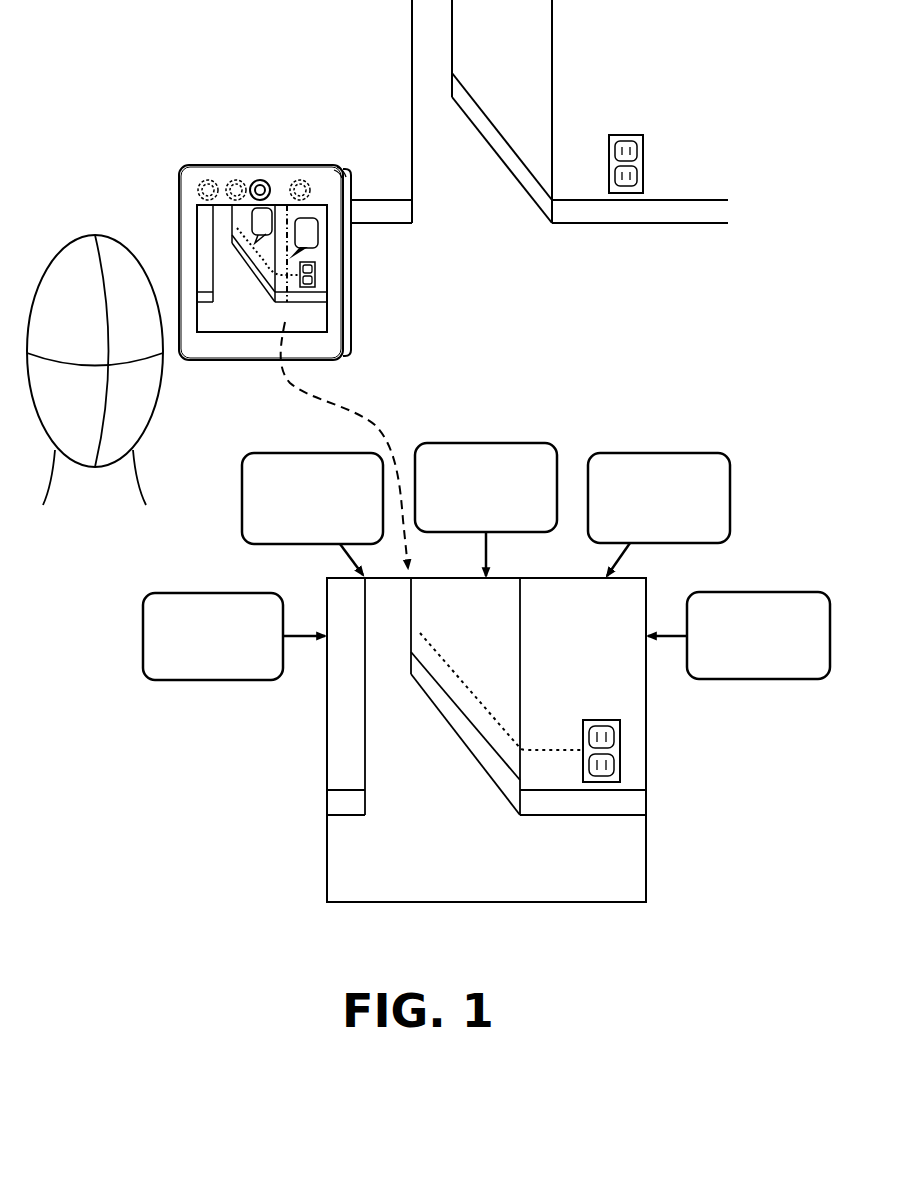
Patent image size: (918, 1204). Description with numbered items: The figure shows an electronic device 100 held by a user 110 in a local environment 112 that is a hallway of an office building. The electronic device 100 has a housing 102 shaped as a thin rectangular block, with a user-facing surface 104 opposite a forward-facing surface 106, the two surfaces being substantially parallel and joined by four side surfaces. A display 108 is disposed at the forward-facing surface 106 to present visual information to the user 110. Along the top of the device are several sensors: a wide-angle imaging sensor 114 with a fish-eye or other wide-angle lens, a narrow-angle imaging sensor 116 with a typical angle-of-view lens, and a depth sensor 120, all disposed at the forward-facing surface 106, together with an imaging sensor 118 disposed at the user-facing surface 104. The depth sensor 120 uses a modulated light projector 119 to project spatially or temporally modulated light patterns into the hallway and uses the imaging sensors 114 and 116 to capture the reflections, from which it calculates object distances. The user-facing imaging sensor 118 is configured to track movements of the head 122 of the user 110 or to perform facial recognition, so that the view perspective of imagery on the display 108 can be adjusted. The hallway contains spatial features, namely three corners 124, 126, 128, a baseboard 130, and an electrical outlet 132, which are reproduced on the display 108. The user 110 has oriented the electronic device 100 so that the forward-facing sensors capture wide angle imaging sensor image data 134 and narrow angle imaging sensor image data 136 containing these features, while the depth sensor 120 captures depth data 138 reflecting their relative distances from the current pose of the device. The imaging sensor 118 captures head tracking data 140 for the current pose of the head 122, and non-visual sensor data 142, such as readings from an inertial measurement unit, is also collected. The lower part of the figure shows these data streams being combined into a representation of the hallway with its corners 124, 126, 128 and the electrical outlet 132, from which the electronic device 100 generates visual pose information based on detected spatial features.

The electronic device 100 is at (176, 233).
The housing 102 is at (351, 281).
The surface 104 is at (236, 351).
The surface 106 is at (360, 341).
The display 108 is at (322, 328).
The user 110 is at (88, 508).
The local environment 112 is at (512, 243).
The wide-angle imaging sensor 114 is at (202, 183).
The narrow-angle imaging sensor 116 is at (306, 182).
The imaging sensor 118 is at (268, 182).
The modulated light projector 119 is at (242, 182).
The depth sensor 120 is at (221, 176).
The head 122 is at (60, 250).
The corner 124 is at (412, 186).
The corner 126 is at (552, 74).
The corner 128 is at (452, 43).
The baseboard 130 is at (530, 183).
The electrical outlet 132 is at (643, 160).
The wide angle imaging sensor image data 134 is at (204, 593).
The narrow angle imaging sensor image data 136 is at (310, 453).
The depth data 138 is at (487, 443).
The head tracking data 140 is at (657, 453).
The non-visual sensor data 142 is at (764, 592).